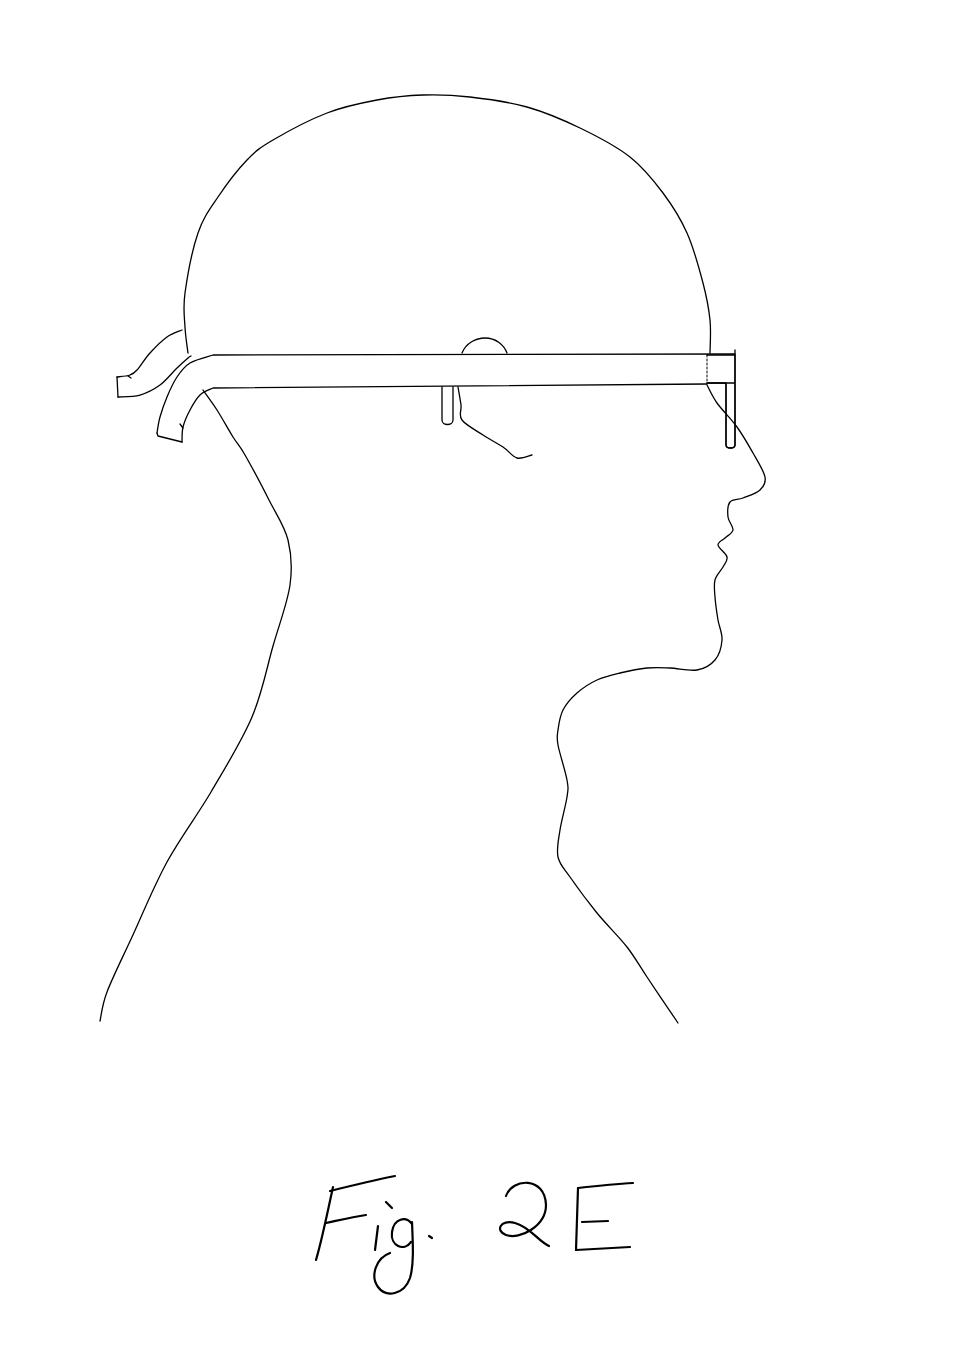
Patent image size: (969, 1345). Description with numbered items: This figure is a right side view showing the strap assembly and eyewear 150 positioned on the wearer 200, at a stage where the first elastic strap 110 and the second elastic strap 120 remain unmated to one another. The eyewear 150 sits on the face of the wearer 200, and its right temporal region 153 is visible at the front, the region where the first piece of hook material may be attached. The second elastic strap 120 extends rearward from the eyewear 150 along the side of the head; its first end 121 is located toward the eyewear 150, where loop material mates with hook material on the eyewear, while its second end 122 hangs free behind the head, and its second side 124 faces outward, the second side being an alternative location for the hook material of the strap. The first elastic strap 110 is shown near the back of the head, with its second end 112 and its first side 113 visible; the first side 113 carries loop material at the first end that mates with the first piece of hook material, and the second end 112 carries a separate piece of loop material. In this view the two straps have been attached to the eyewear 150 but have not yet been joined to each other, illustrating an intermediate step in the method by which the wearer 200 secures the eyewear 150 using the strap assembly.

The wearer 200 is at (395, 97).
The first elastic strap 110 is at (167, 336).
The second end 112 is at (115, 387).
The first side 113 is at (137, 383).
The second elastic strap 120 is at (247, 388).
The first end 121 is at (717, 387).
The second end 122 is at (168, 442).
The second side 124 is at (181, 429).
The eyewear 150 is at (735, 353).
The right temporal region 153 is at (718, 370).